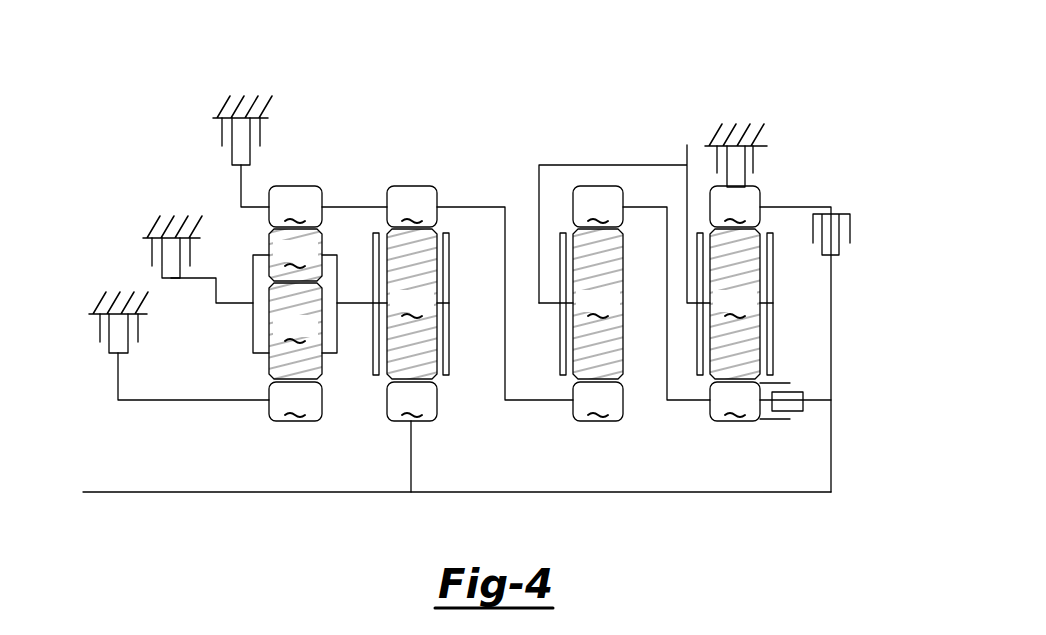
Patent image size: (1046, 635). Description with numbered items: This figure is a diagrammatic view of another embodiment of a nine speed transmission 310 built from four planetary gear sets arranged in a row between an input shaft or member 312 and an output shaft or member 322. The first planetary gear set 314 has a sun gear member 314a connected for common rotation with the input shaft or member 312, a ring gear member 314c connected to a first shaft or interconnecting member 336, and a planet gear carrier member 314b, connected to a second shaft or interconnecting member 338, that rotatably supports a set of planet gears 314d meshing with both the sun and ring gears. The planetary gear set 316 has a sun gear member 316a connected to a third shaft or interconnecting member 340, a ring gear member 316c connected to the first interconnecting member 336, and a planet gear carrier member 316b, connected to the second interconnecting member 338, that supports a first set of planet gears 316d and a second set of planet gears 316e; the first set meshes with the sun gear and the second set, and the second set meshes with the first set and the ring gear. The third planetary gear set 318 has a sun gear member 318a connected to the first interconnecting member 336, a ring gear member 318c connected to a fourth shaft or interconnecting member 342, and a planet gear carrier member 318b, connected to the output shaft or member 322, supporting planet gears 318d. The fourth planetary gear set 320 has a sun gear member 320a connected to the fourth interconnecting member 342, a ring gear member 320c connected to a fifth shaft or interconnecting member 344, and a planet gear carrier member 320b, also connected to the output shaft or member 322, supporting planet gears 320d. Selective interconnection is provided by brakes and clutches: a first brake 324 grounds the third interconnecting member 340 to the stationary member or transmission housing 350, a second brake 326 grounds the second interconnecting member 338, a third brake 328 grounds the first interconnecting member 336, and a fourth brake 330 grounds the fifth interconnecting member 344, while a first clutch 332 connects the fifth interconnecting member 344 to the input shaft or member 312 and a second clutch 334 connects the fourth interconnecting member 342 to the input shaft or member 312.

The transmission 310 is at (835, 85).
The input shaft or member 312 is at (200, 492).
The first planetary gear set 314 is at (412, 178).
The sun gear member 314a is at (412, 437).
The planet gear carrier member 314b is at (449, 350).
The ring gear member 314c is at (412, 206).
The planet gears 314d is at (418, 304).
The planetary gear set 316 is at (310, 178).
The sun gear member 316a is at (295, 401).
The planet gear carrier member 316b is at (253, 332).
The ring gear member 316c is at (295, 206).
The first set of planet gears 316d is at (295, 331).
The second set of planet gears 316e is at (295, 255).
The third planetary gear set 318 is at (582, 162).
The sun gear member 318a is at (598, 401).
The planet gear carrier member 318b is at (560, 325).
The ring gear member 318c is at (598, 206).
The planet gears 318d is at (581, 304).
The fourth planetary gear set 320 is at (782, 181).
The sun gear member 320a is at (735, 401).
The planet gear carrier member 320b is at (773, 312).
The ring gear member 320c is at (735, 206).
The planet gears 320d is at (741, 304).
The output shaft or member 322 is at (687, 157).
The first brake 324 is at (100, 323).
The second brake 326 is at (152, 248).
The third brake 328 is at (222, 130).
The fourth brake 330 is at (753, 150).
The first clutch 332 is at (851, 228).
The second clutch 334 is at (775, 420).
The first shaft or interconnecting member 336 is at (487, 207).
The second shaft or interconnecting member 338 is at (359, 303).
The third shaft or interconnecting member 340 is at (180, 400).
The fourth shaft or interconnecting member 342 is at (690, 400).
The fifth shaft or interconnecting member 344 is at (798, 207).
The stationary member or transmission housing 350 is at (221, 118).